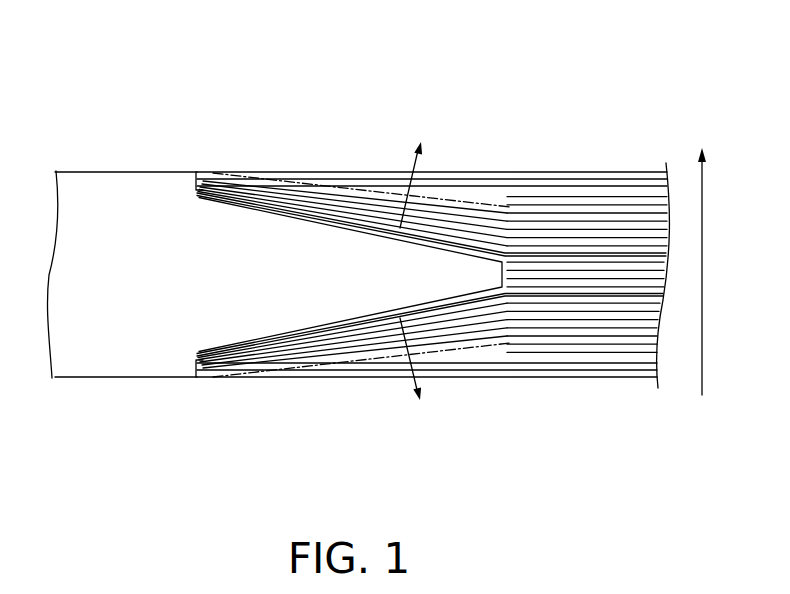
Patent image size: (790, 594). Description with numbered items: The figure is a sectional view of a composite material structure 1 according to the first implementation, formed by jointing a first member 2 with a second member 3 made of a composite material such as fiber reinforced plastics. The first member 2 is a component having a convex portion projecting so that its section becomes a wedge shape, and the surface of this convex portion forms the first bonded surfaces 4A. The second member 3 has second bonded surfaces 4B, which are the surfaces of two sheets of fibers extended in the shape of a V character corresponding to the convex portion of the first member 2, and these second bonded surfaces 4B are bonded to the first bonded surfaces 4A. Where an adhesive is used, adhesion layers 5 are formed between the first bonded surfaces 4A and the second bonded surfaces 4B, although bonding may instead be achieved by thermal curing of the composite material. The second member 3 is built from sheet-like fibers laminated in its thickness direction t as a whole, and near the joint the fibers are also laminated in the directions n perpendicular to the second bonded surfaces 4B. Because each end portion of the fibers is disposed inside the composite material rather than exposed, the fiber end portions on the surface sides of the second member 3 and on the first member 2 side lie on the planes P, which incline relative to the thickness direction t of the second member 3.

The composite material structure 1 is at (703, 83).
The first member 2 is at (141, 172).
The second member 3 is at (558, 171).
The first bonded surfaces 4A is at (208, 192).
The second bonded surfaces 4B is at (360, 170).
The adhesion layers 5 is at (257, 197).
The planes P is at (318, 184).
The directions perpendicular to the second bonded surfaces n is at (414, 275).
The thickness direction t is at (702, 258).